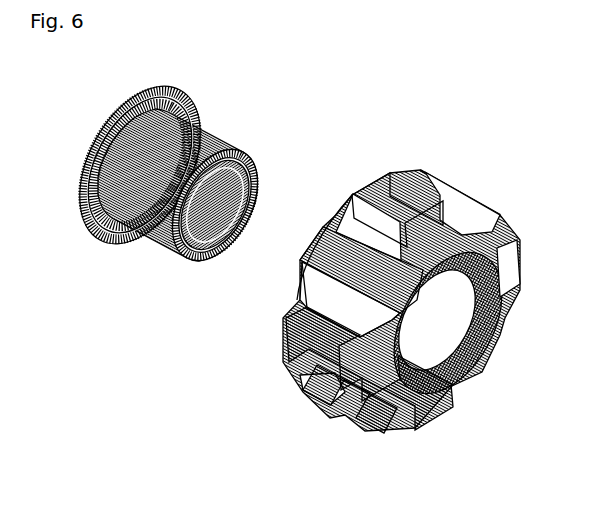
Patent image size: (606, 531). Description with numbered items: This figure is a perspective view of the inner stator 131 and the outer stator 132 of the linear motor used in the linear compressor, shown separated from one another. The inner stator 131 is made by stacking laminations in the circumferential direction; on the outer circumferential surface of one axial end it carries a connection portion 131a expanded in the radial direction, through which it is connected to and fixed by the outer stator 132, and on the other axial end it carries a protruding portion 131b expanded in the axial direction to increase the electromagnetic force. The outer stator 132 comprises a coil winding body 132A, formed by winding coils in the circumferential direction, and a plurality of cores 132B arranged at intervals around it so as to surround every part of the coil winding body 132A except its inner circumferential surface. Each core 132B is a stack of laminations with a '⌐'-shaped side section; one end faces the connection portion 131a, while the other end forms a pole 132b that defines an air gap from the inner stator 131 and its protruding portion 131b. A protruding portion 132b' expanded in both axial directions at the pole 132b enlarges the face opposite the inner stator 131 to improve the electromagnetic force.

The inner stator 131 is at (233, 122).
The connection portion 131a is at (93, 132).
The protruding portion 131b is at (170, 253).
The outer stator 132 is at (472, 172).
The coil winding body 132A is at (317, 308).
The core 132B is at (312, 330).
The pole 132b is at (350, 410).
The protruding portion 132b' is at (407, 419).